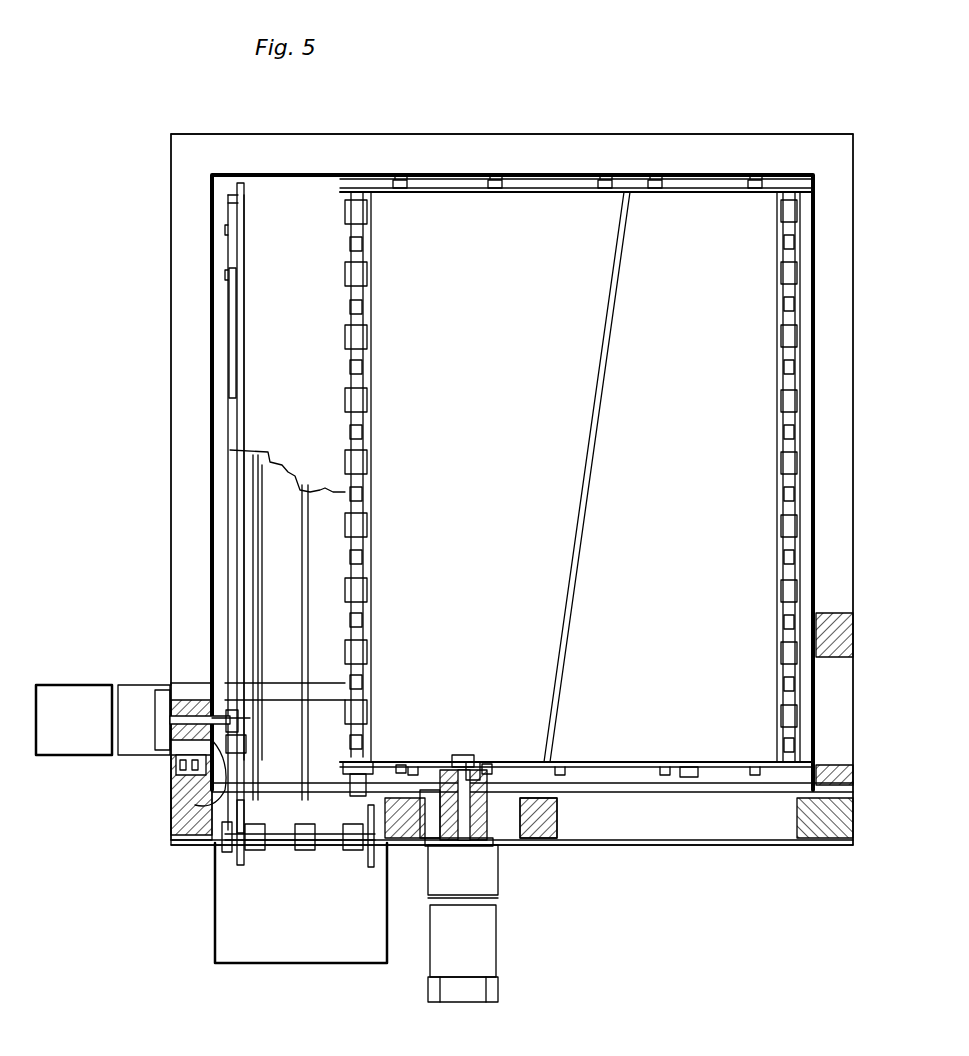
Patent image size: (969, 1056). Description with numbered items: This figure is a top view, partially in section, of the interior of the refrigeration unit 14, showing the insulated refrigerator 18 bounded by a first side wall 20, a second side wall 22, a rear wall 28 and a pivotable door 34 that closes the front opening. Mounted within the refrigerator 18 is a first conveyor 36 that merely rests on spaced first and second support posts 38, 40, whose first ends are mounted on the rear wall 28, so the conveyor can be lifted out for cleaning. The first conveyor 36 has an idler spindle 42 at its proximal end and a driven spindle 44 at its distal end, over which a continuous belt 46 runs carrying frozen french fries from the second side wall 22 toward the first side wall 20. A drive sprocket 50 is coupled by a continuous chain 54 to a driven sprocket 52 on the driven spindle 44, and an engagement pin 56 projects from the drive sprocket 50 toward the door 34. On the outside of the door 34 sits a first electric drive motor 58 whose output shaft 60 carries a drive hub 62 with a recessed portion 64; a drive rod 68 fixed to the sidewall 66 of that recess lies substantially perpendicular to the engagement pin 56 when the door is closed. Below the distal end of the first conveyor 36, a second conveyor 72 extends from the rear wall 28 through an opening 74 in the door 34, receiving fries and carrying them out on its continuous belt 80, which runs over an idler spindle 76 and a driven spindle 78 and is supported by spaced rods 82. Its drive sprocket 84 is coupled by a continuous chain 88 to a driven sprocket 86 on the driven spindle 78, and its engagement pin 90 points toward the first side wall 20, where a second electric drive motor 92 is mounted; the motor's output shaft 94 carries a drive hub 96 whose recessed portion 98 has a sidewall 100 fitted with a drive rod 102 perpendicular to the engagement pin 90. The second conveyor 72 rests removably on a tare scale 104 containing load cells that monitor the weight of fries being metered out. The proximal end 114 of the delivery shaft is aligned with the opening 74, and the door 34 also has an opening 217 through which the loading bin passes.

The refrigeration unit 14 is at (806, 132).
The insulated refrigerator 18 is at (400, 134).
The first side wall 20 is at (190, 363).
The second side wall 22 is at (838, 377).
The rear wall 28 is at (543, 150).
The pivotable door 34 is at (190, 840).
The first conveyor 36 is at (547, 218).
The first support post 38 is at (440, 775).
The second support post 40 is at (690, 778).
The idler spindle 42 is at (785, 241).
The driven spindle 44 is at (348, 228).
The continuous belt 46 is at (695, 215).
The drive sprocket 50 is at (488, 770).
The driven sprocket 52 is at (358, 768).
The continuous chain 54 is at (410, 768).
The engagement pin 56 is at (455, 765).
The first electric drive motor 58 is at (485, 930).
The output shaft 60 is at (478, 840).
The drive hub 62 is at (558, 812).
The recessed portion 64 is at (474, 765).
The sidewall 66 is at (500, 770).
The drive rod 68 is at (432, 842).
The second conveyor 72 is at (232, 302).
The opening 74 is at (215, 842).
The idler spindle 76 is at (225, 197).
The driven spindle 78 is at (330, 845).
The continuous belt 80 is at (302, 278).
The spaced rods 82 is at (262, 464).
The drive sprocket 84 is at (240, 748).
The driven sprocket 86 is at (222, 850).
The continuous chain 88 is at (190, 810).
The engagement pin 90 is at (185, 790).
The second electric drive motor 92 is at (78, 745).
The output shaft 94 is at (178, 708).
The drive hub 96 is at (175, 724).
The recessed portion 98 is at (240, 725).
The sidewall 100 is at (222, 718).
The drive rod 102 is at (160, 750).
The tare scale 104 is at (245, 532).
The proximal end 114 is at (318, 965).
The opening 217 is at (610, 822).